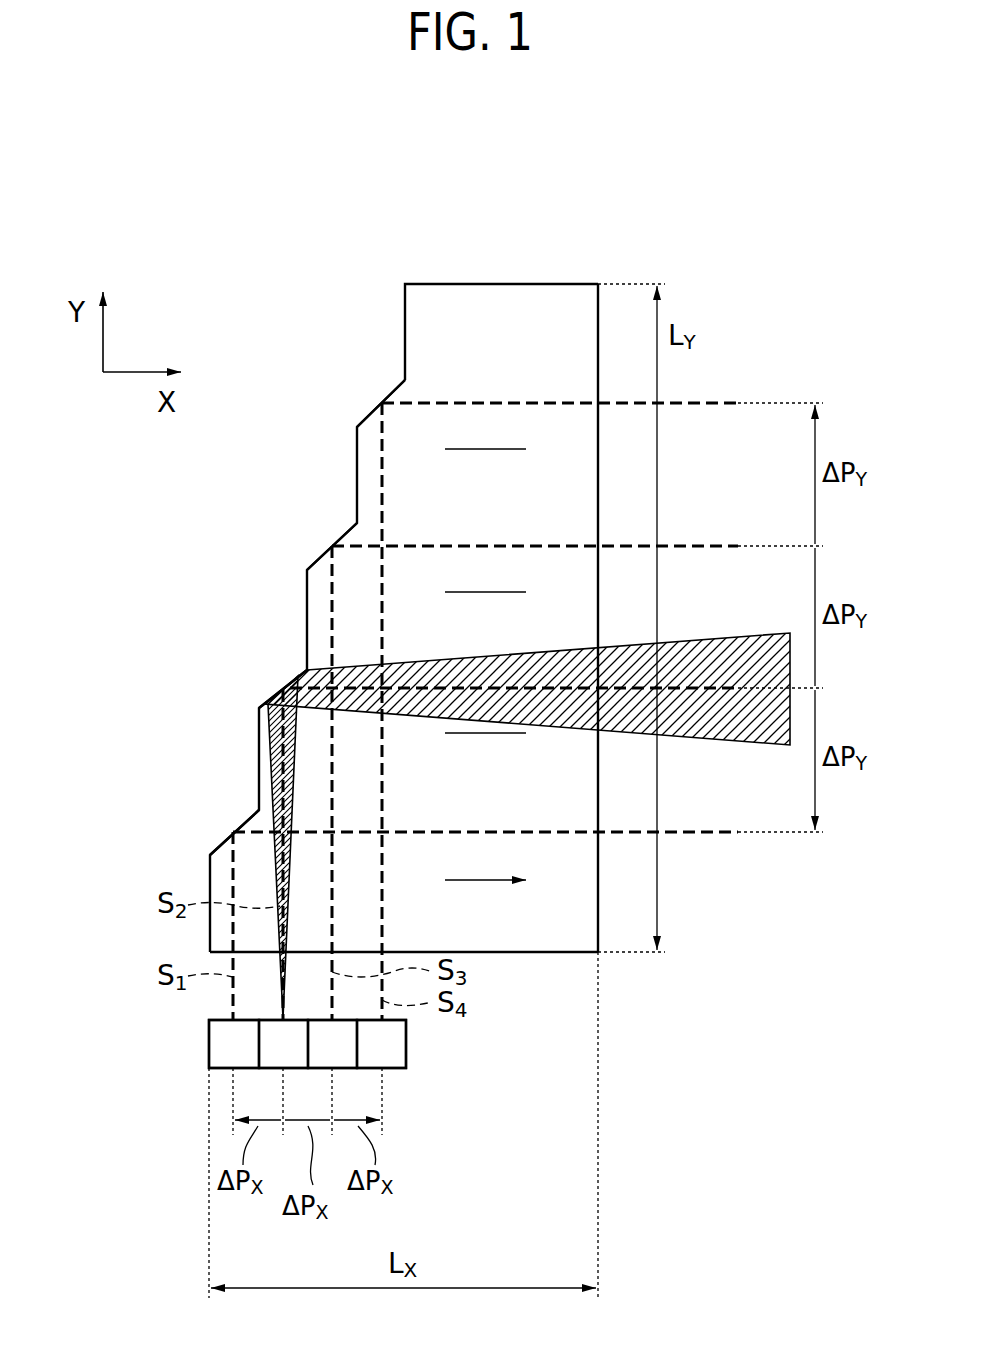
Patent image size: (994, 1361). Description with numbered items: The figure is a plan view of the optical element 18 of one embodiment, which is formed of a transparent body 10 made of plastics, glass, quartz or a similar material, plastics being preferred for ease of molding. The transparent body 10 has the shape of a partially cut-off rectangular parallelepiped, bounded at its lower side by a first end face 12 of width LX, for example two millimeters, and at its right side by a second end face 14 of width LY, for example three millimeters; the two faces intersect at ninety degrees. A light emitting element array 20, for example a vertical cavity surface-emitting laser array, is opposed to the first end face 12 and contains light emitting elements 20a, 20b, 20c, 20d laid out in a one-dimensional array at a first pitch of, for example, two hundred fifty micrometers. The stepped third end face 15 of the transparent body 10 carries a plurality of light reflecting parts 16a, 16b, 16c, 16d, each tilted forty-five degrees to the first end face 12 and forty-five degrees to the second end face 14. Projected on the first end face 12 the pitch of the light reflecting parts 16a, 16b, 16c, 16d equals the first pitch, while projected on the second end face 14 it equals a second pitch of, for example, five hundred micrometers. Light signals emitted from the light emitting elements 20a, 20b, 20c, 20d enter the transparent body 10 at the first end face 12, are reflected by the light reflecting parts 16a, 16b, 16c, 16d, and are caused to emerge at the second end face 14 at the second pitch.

The transparent body 10 is at (515, 298).
The first end face 12 is at (548, 954).
The second end face 14 is at (600, 302).
The third end face 15 is at (258, 538).
The light reflecting part 16a is at (250, 818).
The light reflecting part 16b is at (296, 674).
The light reflecting part 16c is at (345, 536).
The light reflecting part 16d is at (392, 393).
The optical element 18 is at (442, 240).
The light emitting element array 20 is at (328, 1075).
The light emitting element 20a is at (223, 1069).
The light emitting element 20b is at (267, 1069).
The light emitting element 20c is at (342, 1069).
The light emitting element 20d is at (385, 1069).